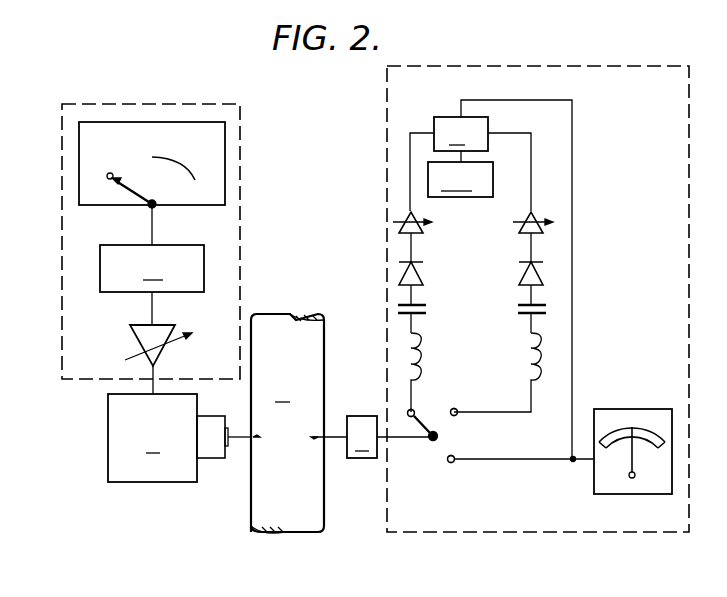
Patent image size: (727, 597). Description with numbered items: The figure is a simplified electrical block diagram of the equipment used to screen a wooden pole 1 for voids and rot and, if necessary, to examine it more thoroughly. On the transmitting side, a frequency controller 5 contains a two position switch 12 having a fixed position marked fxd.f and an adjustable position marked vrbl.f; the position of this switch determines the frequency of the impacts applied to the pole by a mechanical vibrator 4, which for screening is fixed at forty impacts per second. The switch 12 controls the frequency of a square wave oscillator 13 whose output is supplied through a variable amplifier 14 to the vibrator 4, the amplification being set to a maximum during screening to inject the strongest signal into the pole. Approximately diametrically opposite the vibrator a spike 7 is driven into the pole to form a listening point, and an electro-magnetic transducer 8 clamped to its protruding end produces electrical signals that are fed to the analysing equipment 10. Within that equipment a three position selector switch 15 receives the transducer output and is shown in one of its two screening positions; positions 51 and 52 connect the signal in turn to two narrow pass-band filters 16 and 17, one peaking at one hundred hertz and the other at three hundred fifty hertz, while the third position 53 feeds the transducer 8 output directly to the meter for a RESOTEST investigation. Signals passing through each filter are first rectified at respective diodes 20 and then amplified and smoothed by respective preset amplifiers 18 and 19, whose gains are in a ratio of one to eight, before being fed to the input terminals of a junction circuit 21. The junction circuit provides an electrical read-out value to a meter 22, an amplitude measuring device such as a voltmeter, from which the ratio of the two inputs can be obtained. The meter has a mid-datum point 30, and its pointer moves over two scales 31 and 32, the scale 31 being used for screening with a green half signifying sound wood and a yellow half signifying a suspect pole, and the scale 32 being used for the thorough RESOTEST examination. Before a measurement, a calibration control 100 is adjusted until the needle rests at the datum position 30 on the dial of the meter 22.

The wooden pole 1 is at (287, 423).
The mechanical vibrator 4 is at (184, 438).
The frequency controller 5 is at (60, 263).
The spike 7 is at (334, 440).
The electro-magnetic transducer 8 is at (372, 437).
The analysing equipment 10 is at (470, 534).
The two position switch 12 is at (79, 152).
The square wave oscillator 13 is at (152, 248).
The variable amplifier 14 is at (134, 346).
The selector switch 15 is at (400, 400).
The narrow pass-band filter 16 is at (398, 296).
The narrow pass-band filter 17 is at (548, 305).
The preset amplifier 18 is at (409, 215).
The preset amplifier 19 is at (533, 216).
The diode 20 is at (402, 275).
The junction circuit 21 is at (491, 279).
The meter 22 is at (652, 415).
The mid-datum point 30 is at (630, 418).
The scale 31 is at (608, 450).
The scale 32 is at (609, 462).
The switch position S1 51 is at (421, 405).
The switch position S2 52 is at (462, 402).
The switch position S3 53 is at (450, 472).
The calibration control 100 is at (460, 179).